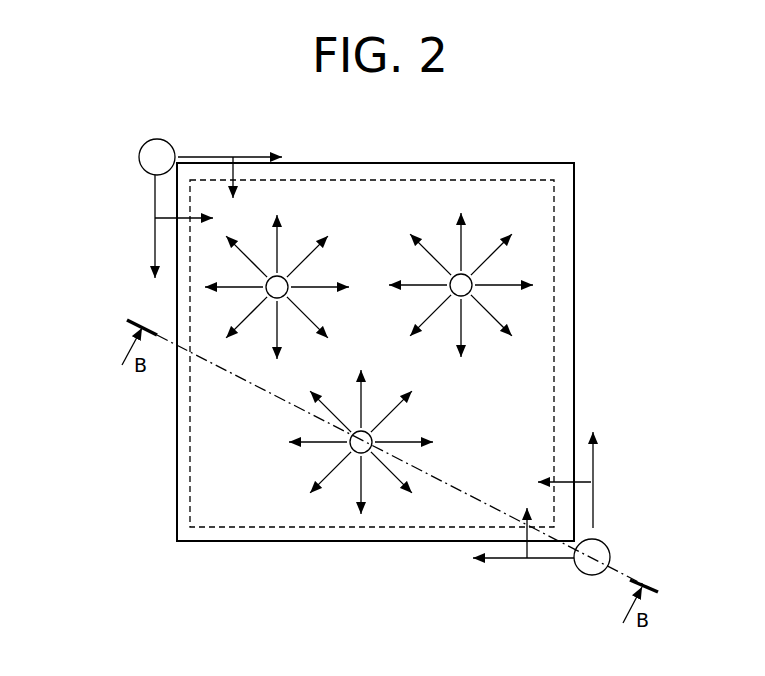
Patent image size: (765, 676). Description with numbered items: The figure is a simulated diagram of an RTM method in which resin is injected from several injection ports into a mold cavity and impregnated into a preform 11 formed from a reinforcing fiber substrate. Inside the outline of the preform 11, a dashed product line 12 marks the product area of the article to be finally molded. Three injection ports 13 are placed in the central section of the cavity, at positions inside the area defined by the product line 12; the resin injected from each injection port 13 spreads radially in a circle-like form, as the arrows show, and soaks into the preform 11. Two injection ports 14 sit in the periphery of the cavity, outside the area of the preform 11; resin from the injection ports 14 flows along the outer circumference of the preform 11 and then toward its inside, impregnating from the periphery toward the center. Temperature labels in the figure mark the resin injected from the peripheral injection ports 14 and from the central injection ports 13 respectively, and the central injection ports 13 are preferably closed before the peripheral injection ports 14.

The preform 11 is at (238, 542).
The product line 12 is at (188, 456).
The injection port 13 is at (281, 280).
The injection port 14 is at (148, 150).